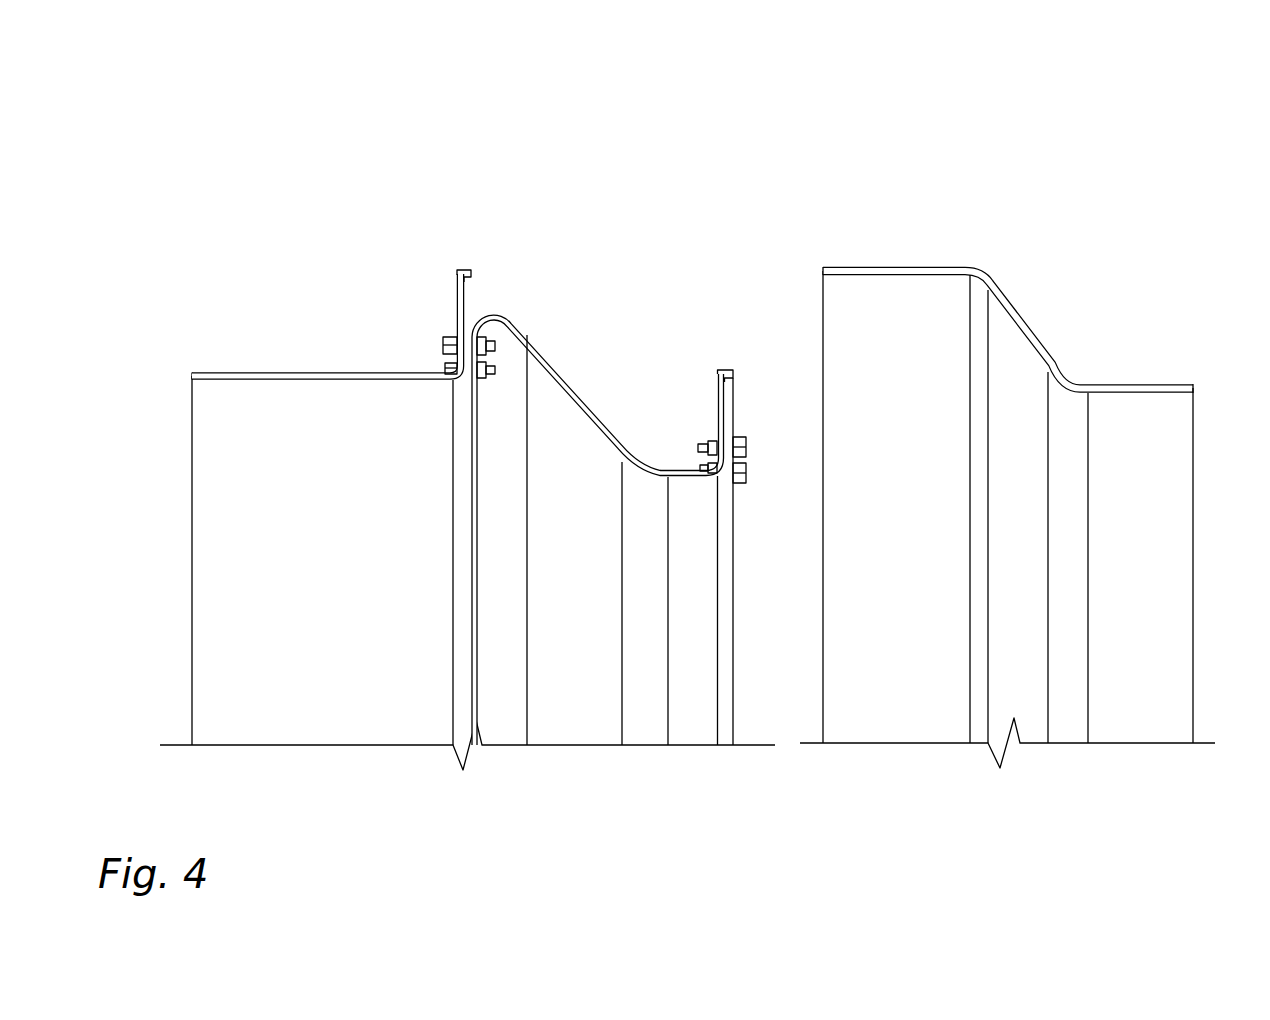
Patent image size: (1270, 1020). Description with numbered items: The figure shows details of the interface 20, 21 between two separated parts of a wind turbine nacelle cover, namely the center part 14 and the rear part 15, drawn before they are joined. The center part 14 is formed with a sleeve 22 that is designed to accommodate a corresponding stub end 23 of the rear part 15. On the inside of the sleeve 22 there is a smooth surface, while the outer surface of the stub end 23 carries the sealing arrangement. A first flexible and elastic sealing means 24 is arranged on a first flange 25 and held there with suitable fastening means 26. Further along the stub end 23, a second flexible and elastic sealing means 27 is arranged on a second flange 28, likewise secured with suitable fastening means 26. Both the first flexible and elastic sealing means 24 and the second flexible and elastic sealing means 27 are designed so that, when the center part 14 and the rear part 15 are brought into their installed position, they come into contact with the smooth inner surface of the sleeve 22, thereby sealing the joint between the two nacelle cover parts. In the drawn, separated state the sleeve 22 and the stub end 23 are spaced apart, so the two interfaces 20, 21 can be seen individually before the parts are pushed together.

The center part 14 is at (1168, 385).
The rear part 15 is at (207, 370).
The interface 20 is at (380, 170).
The interface 21 is at (1013, 157).
The sleeve 22 is at (900, 276).
The stub end 23 is at (403, 376).
The first flexible and elastic sealing means 24 is at (468, 268).
The first flange 25 is at (485, 337).
The fastening means 26 is at (500, 312).
The second flexible and elastic sealing means 27 is at (726, 368).
The second flange 28 is at (741, 436).